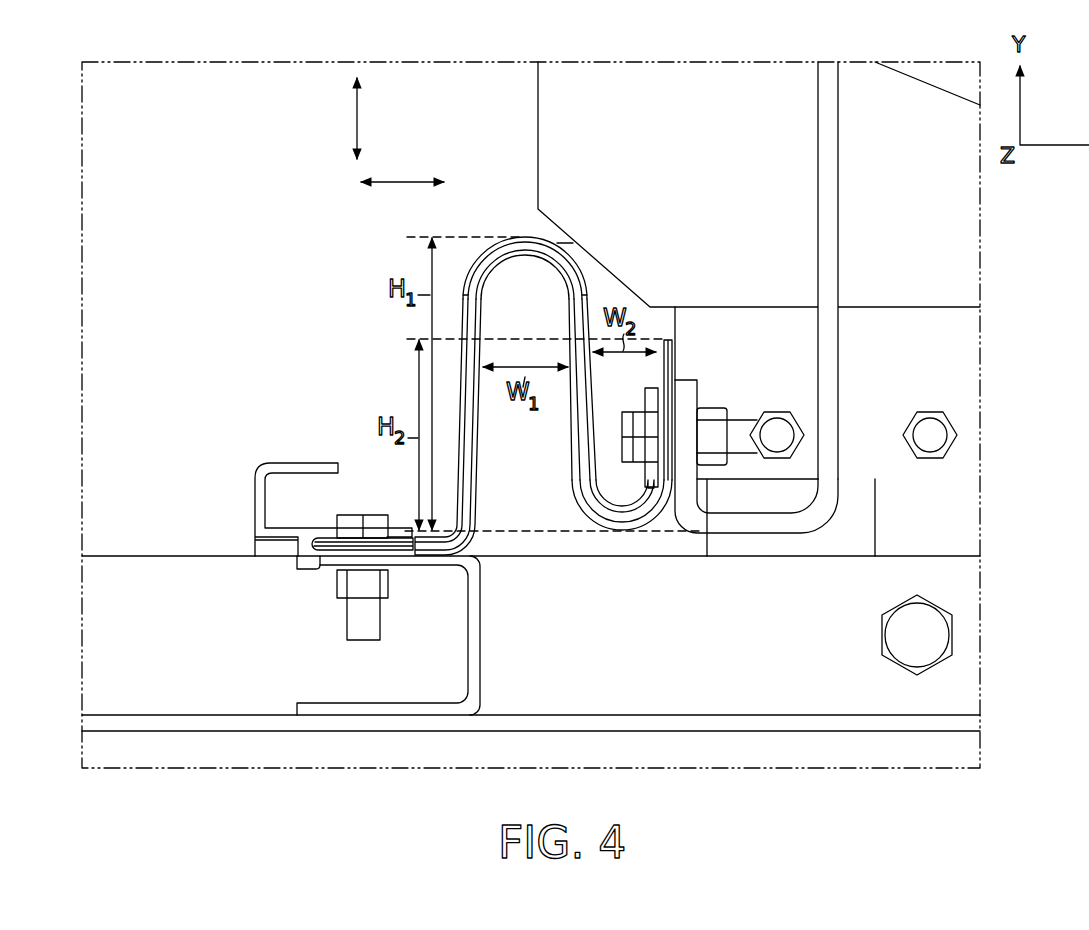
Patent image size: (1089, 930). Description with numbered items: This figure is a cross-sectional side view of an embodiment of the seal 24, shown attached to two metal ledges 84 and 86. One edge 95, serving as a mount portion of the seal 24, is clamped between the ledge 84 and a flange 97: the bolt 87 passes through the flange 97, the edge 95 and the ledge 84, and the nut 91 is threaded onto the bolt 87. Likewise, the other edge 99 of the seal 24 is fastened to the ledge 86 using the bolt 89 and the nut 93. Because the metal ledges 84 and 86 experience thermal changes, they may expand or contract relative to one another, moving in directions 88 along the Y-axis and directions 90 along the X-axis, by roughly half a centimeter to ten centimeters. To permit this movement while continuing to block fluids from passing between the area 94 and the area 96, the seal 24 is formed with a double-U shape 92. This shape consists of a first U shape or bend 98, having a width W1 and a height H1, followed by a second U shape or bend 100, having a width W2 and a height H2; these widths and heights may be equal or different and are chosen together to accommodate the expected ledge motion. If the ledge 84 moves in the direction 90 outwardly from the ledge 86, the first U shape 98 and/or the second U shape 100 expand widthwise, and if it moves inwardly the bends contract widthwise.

The seal 24 is at (351, 267).
The ledge 84 is at (402, 566).
The ledge 86 is at (690, 395).
The bolt 87 is at (352, 520).
The directions 88 is at (359, 120).
The bolt 89 is at (643, 422).
The directions 90 is at (405, 182).
The nut 91 is at (340, 583).
The double-U shape 92 is at (578, 608).
The nut 93 is at (714, 426).
The area 94 is at (781, 661).
The edge 95 is at (322, 558).
The area 96 is at (243, 318).
The flange 97 is at (286, 528).
The first U shape 98 is at (526, 237).
The edge 99 is at (674, 354).
The second U shape 100 is at (623, 533).